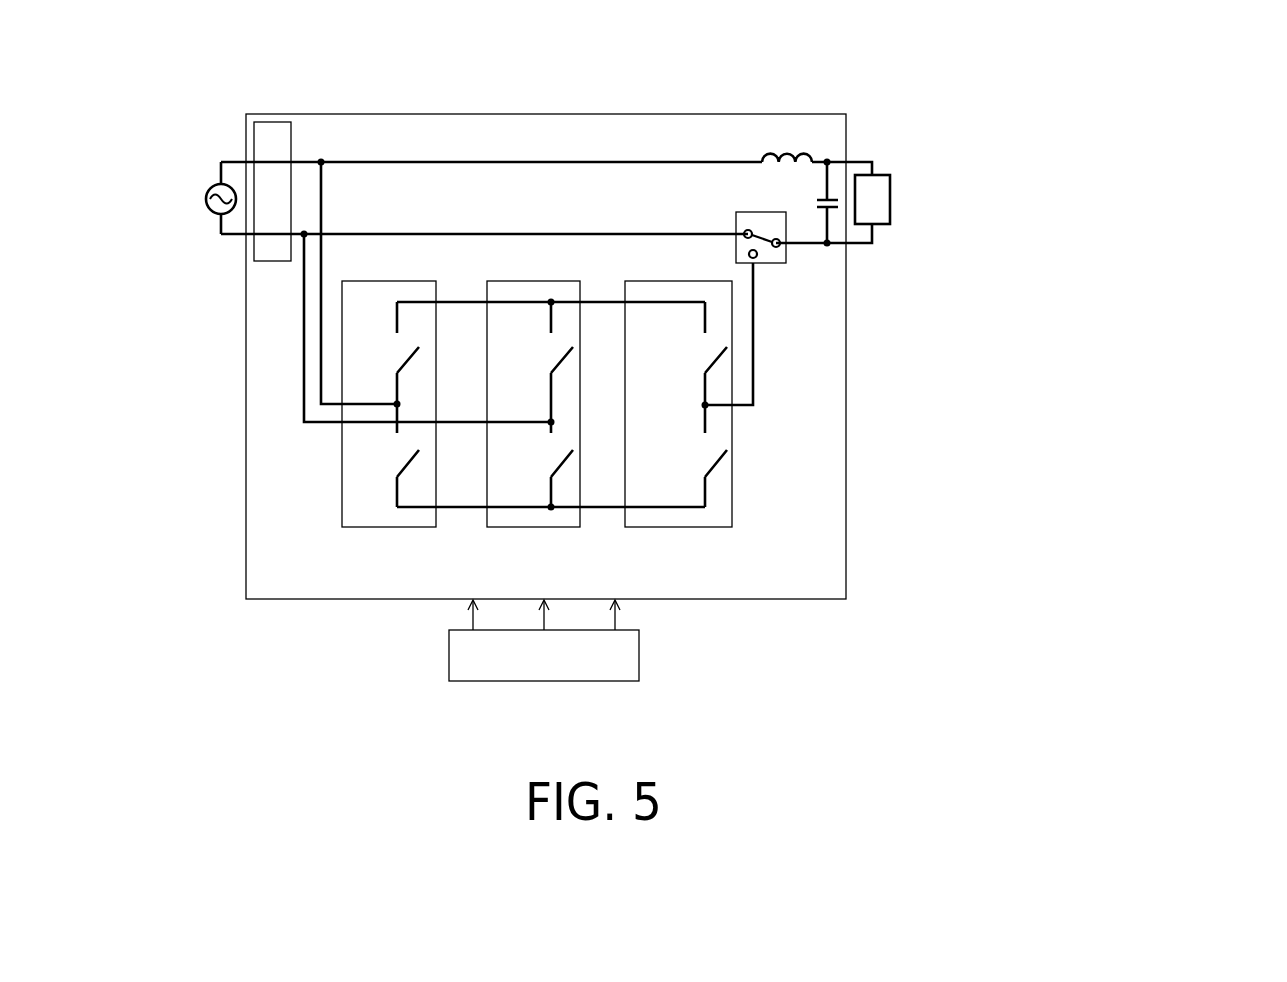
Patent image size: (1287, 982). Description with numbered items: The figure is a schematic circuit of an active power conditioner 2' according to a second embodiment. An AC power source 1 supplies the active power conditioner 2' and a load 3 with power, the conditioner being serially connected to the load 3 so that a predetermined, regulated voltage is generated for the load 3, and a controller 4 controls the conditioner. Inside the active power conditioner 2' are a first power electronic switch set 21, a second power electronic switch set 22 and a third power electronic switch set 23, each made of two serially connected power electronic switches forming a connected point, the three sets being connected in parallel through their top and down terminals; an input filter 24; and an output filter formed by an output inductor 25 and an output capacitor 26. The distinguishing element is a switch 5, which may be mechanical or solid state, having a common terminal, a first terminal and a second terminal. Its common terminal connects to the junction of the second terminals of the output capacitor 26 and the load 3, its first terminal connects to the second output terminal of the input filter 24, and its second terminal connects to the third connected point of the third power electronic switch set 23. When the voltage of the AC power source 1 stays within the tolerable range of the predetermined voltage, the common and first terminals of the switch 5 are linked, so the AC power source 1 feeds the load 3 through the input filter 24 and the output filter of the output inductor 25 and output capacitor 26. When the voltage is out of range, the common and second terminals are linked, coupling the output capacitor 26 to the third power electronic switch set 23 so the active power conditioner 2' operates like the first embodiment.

The AC power source 1 is at (210, 207).
The active power conditioner 2' is at (750, 356).
The load 3 is at (888, 178).
The controller 4 is at (470, 681).
The switch 5 is at (767, 263).
The first power electronic switch set 21 is at (368, 527).
The second power electronic switch set 22 is at (552, 528).
The third power electronic switch set 23 is at (673, 528).
The input filter 24 is at (292, 137).
The output inductor 25 is at (768, 163).
The output capacitor 26 is at (818, 225).